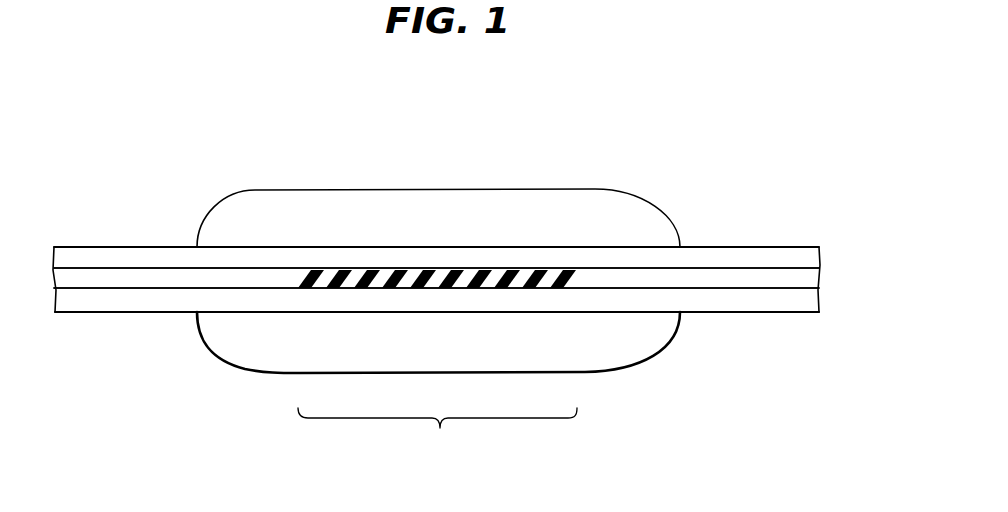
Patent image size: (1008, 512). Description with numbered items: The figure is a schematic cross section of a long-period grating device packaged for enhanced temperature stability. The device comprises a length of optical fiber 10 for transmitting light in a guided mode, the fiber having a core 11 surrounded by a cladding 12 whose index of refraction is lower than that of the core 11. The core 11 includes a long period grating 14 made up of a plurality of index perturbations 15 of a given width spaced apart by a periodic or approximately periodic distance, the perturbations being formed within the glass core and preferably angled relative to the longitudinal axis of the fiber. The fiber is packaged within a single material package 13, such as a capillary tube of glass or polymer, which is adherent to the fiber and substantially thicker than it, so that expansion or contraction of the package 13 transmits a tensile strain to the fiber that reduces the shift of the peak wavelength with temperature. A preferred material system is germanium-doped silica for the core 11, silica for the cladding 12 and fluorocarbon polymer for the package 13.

The optical fiber 10 is at (784, 192).
The core 11 is at (820, 278).
The cladding 12 is at (82, 258).
The package 13 is at (513, 186).
The long period grating 14 is at (437, 435).
The index perturbations 15 is at (325, 277).